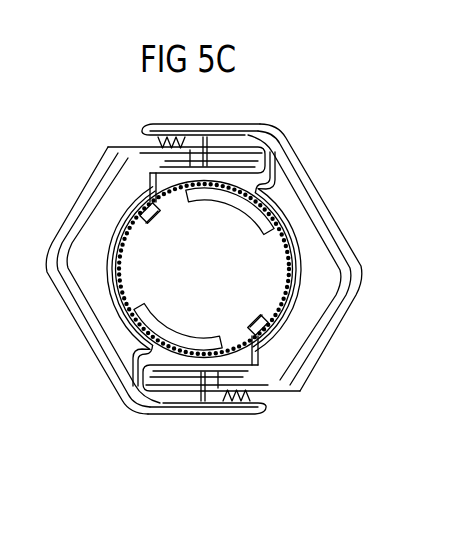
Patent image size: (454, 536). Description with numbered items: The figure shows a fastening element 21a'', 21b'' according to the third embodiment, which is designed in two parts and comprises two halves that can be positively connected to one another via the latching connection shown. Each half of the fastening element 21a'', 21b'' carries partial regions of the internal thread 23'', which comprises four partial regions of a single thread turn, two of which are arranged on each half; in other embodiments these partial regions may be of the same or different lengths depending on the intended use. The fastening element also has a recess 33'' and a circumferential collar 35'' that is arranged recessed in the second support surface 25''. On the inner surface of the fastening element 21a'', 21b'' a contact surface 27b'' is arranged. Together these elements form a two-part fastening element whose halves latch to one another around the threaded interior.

The fastening element half 21a'' is at (286, 262).
The fastening element half 21b'' is at (155, 299).
The internal thread 23'' is at (117, 160).
The second support surface 25'' is at (244, 116).
The contact surface 27b'' is at (325, 349).
The recess 33'' is at (324, 260).
The circumferential collar 35'' is at (267, 269).